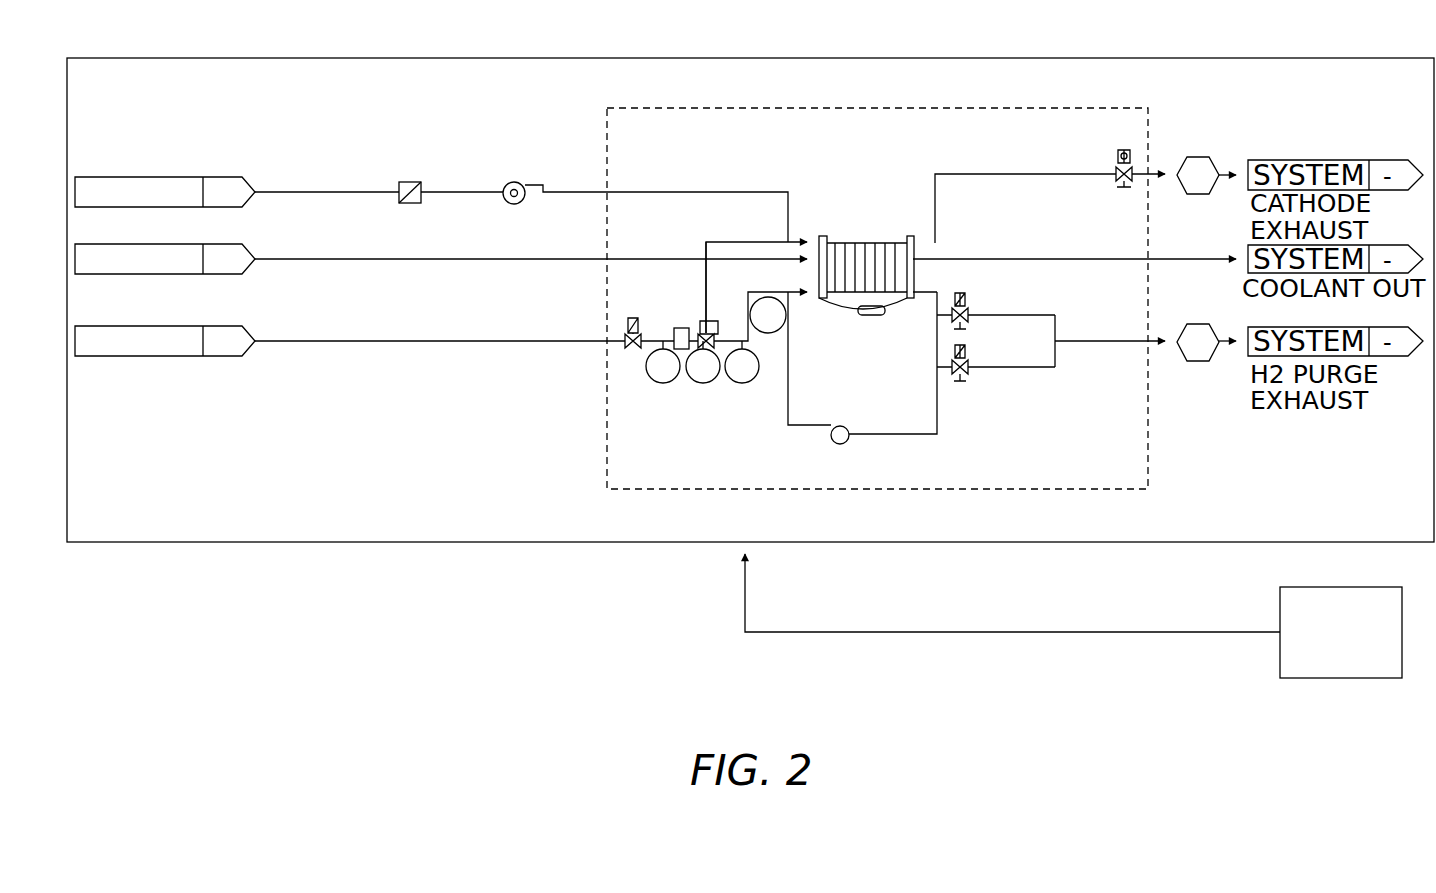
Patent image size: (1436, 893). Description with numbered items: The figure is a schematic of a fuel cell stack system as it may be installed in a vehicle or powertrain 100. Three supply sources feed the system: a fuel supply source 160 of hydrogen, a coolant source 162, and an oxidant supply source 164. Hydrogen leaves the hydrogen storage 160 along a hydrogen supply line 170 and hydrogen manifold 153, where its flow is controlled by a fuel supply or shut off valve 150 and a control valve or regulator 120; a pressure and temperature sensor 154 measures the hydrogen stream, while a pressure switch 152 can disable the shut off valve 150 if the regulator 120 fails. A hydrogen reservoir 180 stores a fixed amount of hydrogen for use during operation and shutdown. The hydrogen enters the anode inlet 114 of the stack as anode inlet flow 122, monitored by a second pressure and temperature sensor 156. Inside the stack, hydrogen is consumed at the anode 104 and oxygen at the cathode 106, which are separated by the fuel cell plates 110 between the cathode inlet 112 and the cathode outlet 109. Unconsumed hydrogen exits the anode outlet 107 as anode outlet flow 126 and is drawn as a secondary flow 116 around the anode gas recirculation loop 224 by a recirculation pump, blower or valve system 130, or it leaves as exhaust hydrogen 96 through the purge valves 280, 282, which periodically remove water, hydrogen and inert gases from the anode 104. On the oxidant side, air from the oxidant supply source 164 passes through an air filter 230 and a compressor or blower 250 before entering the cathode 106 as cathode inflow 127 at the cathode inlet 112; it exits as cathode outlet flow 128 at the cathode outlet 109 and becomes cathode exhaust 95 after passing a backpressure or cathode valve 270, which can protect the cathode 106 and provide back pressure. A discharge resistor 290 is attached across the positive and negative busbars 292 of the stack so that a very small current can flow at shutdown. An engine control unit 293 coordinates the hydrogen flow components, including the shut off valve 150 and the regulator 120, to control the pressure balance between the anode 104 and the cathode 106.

The vehicle or powertrain 100 is at (230, 92).
The anode 104 is at (899, 210).
The cathode 106 is at (877, 242).
The anode outlet 107 is at (908, 300).
The cathode outlet 109 is at (911, 236).
The fuel cell plates 110 is at (850, 243).
The cathode inlet 112 is at (822, 236).
The anode inlet 114 is at (818, 300).
The secondary flow 116 is at (920, 421).
The control valve and/or regulator 120 is at (702, 386).
The anode inlet flow 122 is at (790, 286).
The anode outlet flow 126 is at (968, 286).
The cathode inflow 127 is at (760, 189).
The cathode outlet flow 128 is at (990, 220).
The recirculation pump, blower and/or valve system 130 is at (841, 446).
The fuel supply or shut off valve 150 is at (633, 316).
The pressure switch 152 is at (743, 386).
The hydrogen manifold 153 is at (570, 382).
The pressure and temperature sensor or transmitter 154 is at (660, 386).
The pressure and temperature sensor or transmitter 156 is at (748, 292).
The fuel supply source 160 is at (148, 326).
The coolant source 162 is at (148, 244).
The oxidant supply source 164 is at (148, 177).
The hydrogen supply line 170 is at (497, 352).
The hydrogen reservoir 180 is at (680, 328).
The anode gas recirculation loop 224 is at (822, 428).
The air filter 230 is at (410, 182).
The compressor and/or blower 250 is at (514, 205).
The cathode valve 270 is at (1124, 150).
The purge valve 280 is at (966, 386).
The purge valve 282 is at (966, 299).
The discharge resistor 290 is at (884, 327).
The busbars 292 is at (850, 314).
The engine control unit 293 is at (1353, 587).
The cathode exhaust 95 is at (1198, 175).
The exhaust hydrogen 96 is at (1198, 342).